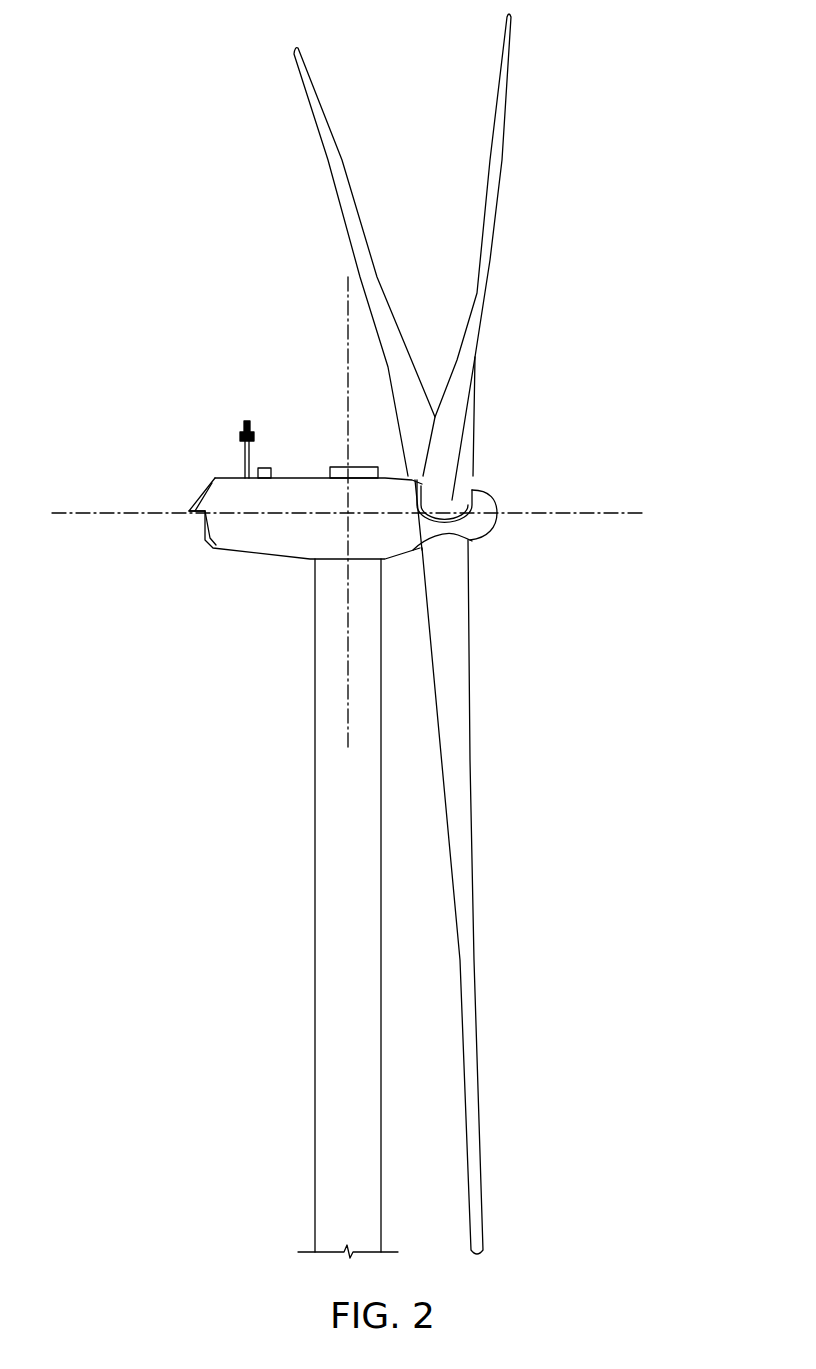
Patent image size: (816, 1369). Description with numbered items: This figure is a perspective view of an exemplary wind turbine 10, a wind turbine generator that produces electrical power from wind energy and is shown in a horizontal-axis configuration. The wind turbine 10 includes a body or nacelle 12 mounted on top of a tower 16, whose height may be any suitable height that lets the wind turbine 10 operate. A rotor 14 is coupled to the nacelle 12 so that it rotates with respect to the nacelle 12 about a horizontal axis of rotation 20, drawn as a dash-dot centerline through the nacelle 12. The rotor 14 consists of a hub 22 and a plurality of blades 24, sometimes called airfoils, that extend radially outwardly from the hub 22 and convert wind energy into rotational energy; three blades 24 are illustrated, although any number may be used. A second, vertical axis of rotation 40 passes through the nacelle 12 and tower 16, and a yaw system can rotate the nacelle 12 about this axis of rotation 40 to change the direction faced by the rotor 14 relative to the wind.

The wind turbine 10 is at (120, 84).
The nacelle 12 is at (230, 558).
The rotor 14 is at (484, 561).
The tower 16 is at (314, 883).
The axis of rotation 20 is at (625, 515).
The hub 22 is at (497, 518).
The blades 24 is at (318, 88).
The axis of rotation 40 is at (347, 328).